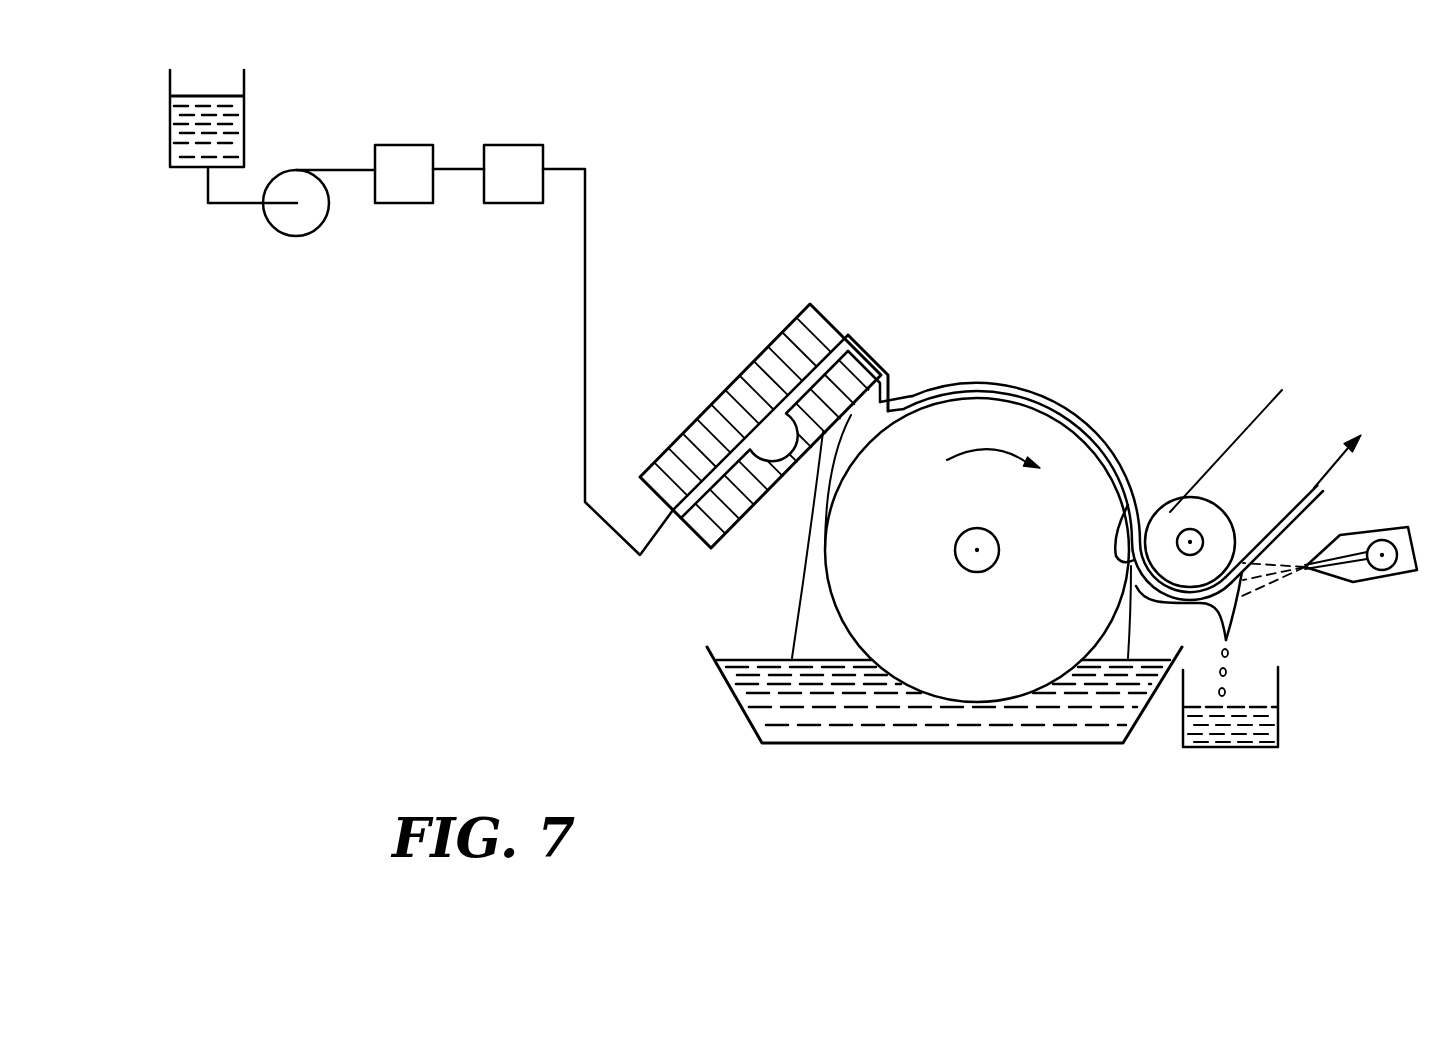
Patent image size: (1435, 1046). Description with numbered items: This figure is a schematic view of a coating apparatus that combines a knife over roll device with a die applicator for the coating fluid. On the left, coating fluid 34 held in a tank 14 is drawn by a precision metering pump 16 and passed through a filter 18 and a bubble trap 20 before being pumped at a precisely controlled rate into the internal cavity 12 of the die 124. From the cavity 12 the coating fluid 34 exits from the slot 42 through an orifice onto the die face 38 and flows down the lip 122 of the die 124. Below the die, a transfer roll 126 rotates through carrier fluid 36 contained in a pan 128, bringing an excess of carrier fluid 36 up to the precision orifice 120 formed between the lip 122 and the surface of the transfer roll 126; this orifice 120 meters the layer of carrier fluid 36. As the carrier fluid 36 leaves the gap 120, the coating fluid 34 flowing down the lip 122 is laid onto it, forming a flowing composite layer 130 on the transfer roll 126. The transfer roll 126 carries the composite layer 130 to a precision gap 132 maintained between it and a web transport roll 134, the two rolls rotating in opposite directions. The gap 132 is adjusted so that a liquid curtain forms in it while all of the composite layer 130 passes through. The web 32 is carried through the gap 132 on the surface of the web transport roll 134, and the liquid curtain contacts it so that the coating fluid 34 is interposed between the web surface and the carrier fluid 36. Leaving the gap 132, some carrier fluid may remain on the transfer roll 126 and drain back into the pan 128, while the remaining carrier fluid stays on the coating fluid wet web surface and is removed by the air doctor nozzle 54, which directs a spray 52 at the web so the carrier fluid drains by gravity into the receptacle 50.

The internal cavity 12 is at (775, 420).
The tank 14 is at (245, 120).
The precision metering pump 16 is at (307, 230).
The filter 18 is at (397, 153).
The bubble trap 20 is at (512, 153).
The web 32 is at (1273, 402).
The coating fluid 34 is at (213, 102).
The carrier fluid 36 is at (748, 657).
The die face 38 is at (868, 351).
The slot 42 is at (800, 378).
The receptacle 50 is at (1280, 715).
The spray 52 is at (1280, 587).
The air doctor nozzle 54 is at (1395, 582).
The precision orifice 120 is at (915, 395).
The lip 122 is at (903, 364).
The die 124 is at (655, 440).
The transfer roll 126 is at (1080, 463).
The pan 128 is at (737, 703).
The composite layer 130 is at (1053, 403).
The precision gap 132 is at (1133, 510).
The web transport roll 134 is at (1215, 515).